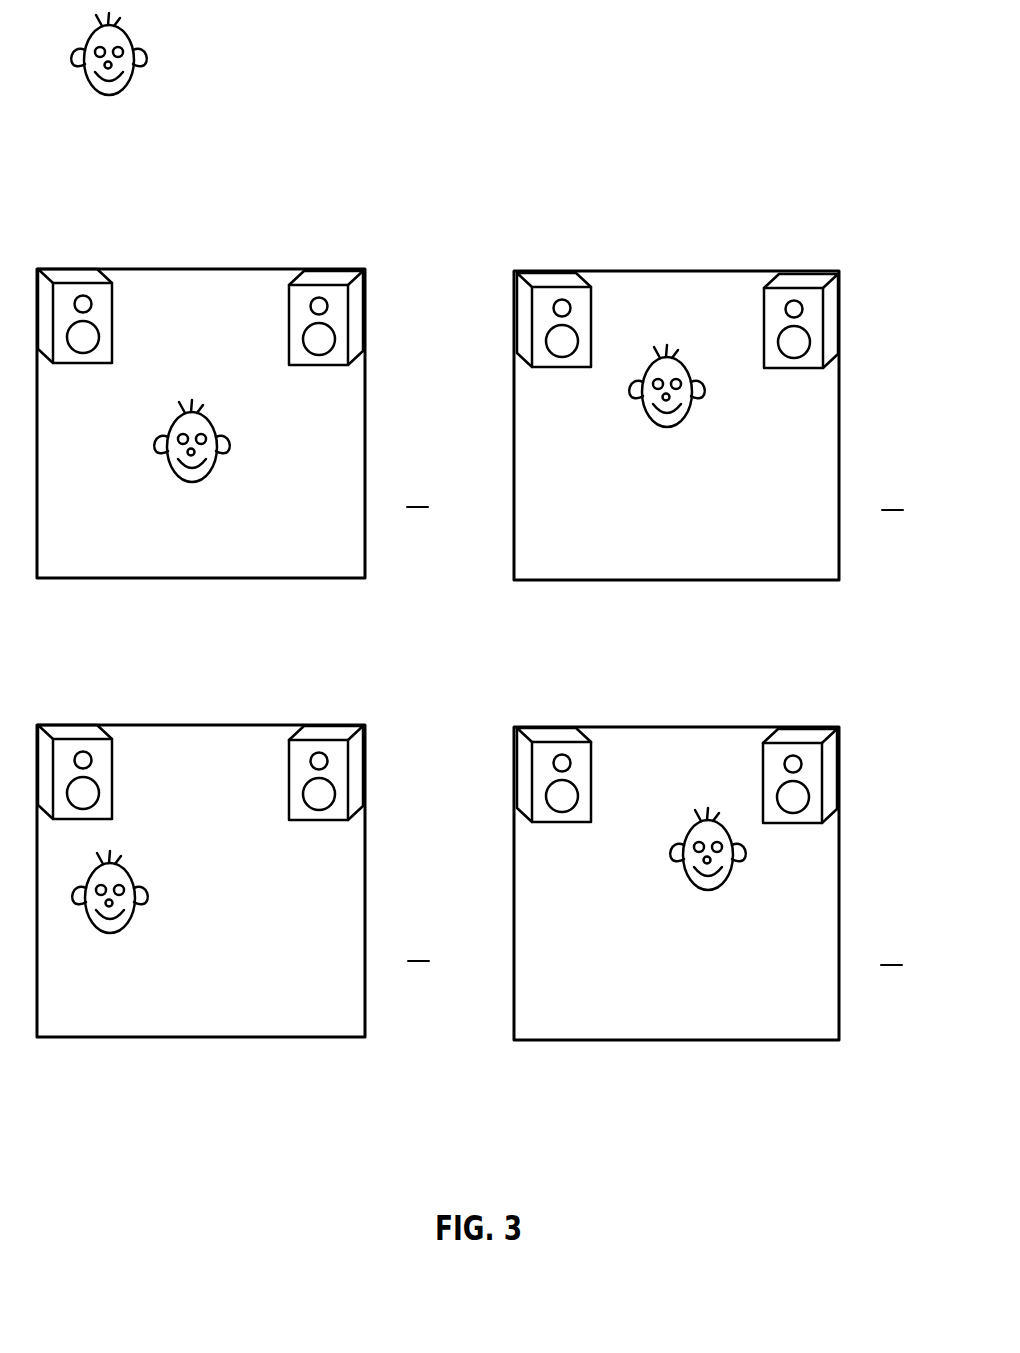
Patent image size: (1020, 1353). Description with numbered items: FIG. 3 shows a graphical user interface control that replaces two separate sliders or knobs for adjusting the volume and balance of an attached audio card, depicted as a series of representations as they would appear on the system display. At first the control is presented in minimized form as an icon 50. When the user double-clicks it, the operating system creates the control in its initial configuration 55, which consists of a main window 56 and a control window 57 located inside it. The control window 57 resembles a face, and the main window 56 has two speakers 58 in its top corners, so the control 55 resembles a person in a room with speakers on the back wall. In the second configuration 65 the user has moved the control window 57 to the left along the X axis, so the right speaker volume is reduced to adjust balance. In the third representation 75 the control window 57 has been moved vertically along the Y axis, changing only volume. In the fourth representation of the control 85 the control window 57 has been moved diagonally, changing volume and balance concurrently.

The icon 50 is at (145, 78).
The initial configuration of the control 55 is at (246, 423).
The main window 56 is at (366, 378).
The control window 57 is at (226, 450).
The speakers 58 is at (288, 317).
The second configuration of the control 65 is at (234, 881).
The third representation of the control 75 is at (709, 425).
The fourth representation of the control 85 is at (709, 883).